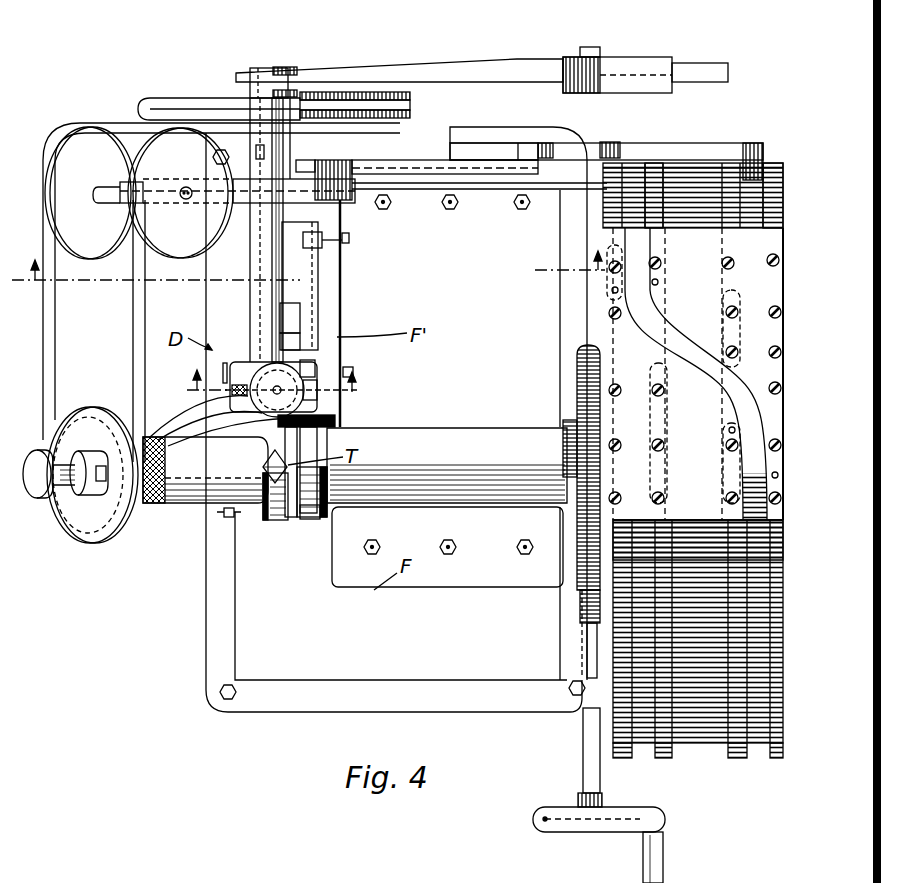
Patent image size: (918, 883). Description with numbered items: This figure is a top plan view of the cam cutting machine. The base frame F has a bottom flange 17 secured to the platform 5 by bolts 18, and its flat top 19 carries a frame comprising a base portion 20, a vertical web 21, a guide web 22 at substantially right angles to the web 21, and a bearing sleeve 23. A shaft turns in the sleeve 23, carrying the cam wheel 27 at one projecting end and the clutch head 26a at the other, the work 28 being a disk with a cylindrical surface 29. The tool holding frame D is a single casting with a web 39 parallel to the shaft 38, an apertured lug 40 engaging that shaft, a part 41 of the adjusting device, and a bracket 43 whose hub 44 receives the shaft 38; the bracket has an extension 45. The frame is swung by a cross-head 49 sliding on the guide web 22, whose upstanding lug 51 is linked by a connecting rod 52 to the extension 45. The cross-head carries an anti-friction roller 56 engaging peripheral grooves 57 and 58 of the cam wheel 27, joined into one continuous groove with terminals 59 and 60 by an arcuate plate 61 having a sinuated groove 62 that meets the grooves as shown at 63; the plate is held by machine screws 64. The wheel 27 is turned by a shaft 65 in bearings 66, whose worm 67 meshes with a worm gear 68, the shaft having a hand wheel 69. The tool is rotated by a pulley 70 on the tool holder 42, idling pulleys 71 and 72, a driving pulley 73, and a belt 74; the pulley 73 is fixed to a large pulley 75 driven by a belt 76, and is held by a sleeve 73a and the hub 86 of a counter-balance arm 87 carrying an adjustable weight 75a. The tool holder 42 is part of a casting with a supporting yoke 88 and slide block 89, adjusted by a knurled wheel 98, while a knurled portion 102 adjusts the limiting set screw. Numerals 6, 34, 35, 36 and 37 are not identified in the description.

The platform 5 is at (307, 271).
The section line 6- 6 is at (270, 385).
The bottom flange 17 is at (206, 640).
The bolts 18 is at (222, 148).
The flat horizontal portion 19 is at (280, 566).
The base portion 20 is at (518, 403).
The vertical web 21 is at (338, 290).
The guide web 22 is at (478, 191).
The bearing sleeve 23 is at (443, 436).
The clutch head 26a is at (312, 522).
The cam wheel 27 is at (698, 639).
The work 28 is at (268, 522).
The cylindrical surface 29 is at (305, 520).
The slide block 34 is at (318, 270).
The set screw 35 is at (350, 238).
The nut 36 is at (345, 232).
The guide rod 37 is at (252, 247).
The shaft 38 is at (300, 168).
The web or bar 39 is at (283, 306).
The apertured lug 40 is at (290, 336).
The part of adjusting device 41 is at (223, 372).
The tool holder 42 is at (178, 505).
The bracket 43 is at (253, 206).
The hub portion 44 is at (372, 172).
The extension 45 is at (410, 166).
The cross-head 49 is at (736, 150).
The upstanding lug 51 is at (502, 150).
The connecting rod or link 52 is at (418, 165).
The anti-friction roller 56 is at (765, 162).
The peripheral groove 57 is at (716, 196).
The peripheral groove 58 is at (633, 186).
The groove terminal 59 is at (754, 230).
The groove terminal 60 is at (640, 526).
The arcuate plate section 61 is at (787, 401).
The sinuated groove 62 is at (677, 351).
The groove junction 63 is at (640, 250).
The machine screws 64 is at (781, 445).
The rotatable shaft 65 is at (583, 733).
The bearings 66 is at (585, 650).
The worm 67 is at (566, 422).
The worm gear 68 is at (578, 345).
The hand wheel 69 is at (608, 832).
The pulley 70 is at (92, 412).
The idling pulley 71 is at (97, 246).
The idling pulley 72 is at (175, 246).
The driving pulley 73 is at (240, 122).
The sleeve 73a is at (258, 152).
The belt 74 is at (50, 322).
The large pulley 75 is at (296, 90).
The weight 75a is at (638, 72).
The belt 76 is at (404, 110).
The hub 86 is at (262, 68).
The counter-balance arm 87 is at (355, 77).
The supporting yoke 88 is at (200, 425).
The slide block 89 is at (318, 392).
The knurled wheel 98 is at (305, 430).
The knurled portion 102 is at (200, 456).